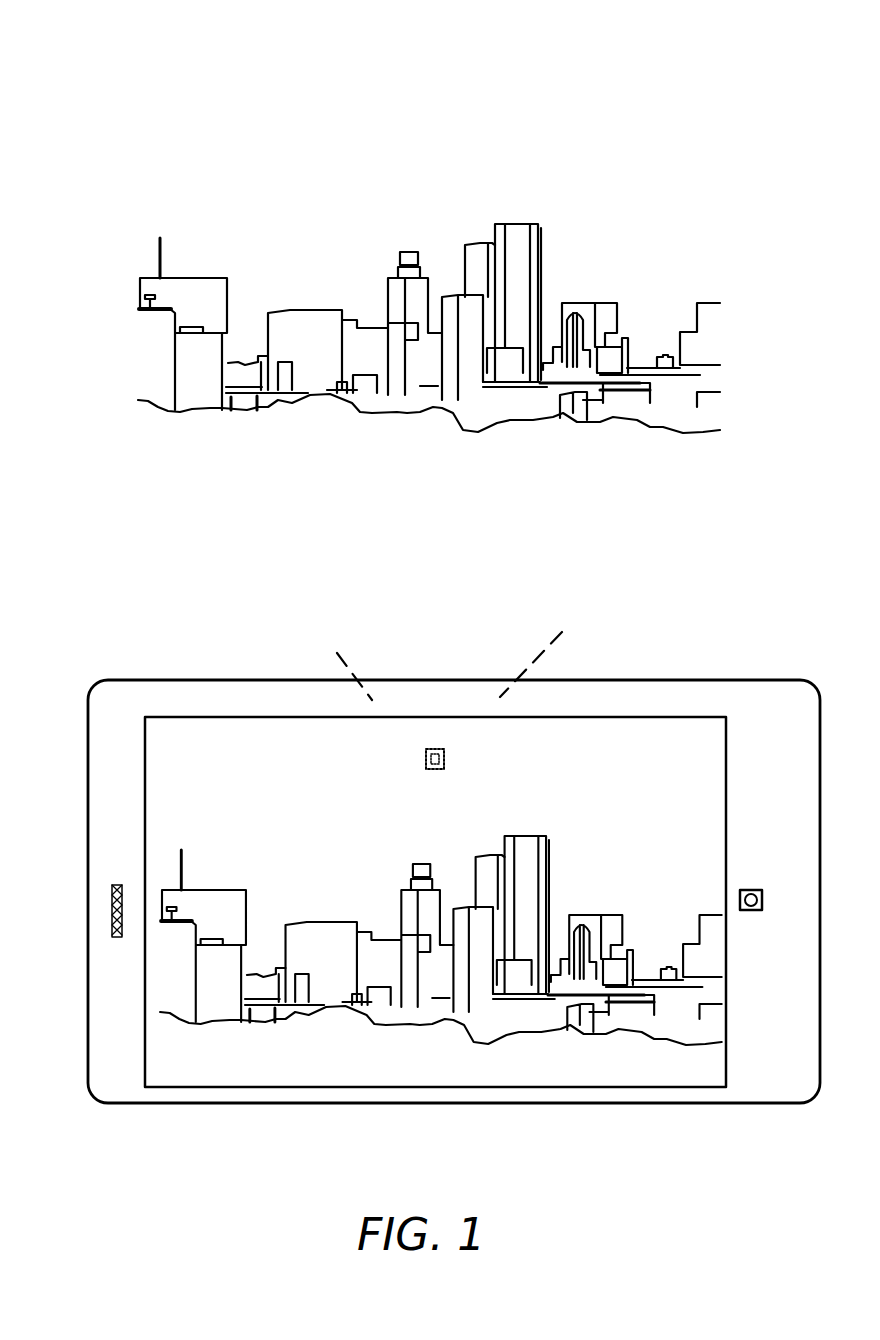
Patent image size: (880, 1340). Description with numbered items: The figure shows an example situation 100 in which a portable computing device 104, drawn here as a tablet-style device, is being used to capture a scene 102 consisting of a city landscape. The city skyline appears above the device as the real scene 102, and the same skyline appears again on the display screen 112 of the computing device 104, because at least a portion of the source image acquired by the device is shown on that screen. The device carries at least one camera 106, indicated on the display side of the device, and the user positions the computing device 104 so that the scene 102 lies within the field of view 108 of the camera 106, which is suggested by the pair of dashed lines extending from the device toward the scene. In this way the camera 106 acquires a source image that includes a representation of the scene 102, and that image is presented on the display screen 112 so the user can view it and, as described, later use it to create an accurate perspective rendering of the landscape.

The example situation 100 is at (786, 100).
The scene 102 is at (500, 212).
The computing device 104 is at (88, 700).
The camera 106 is at (418, 760).
The field of view 108 is at (330, 643).
The display screen 112 is at (212, 770).